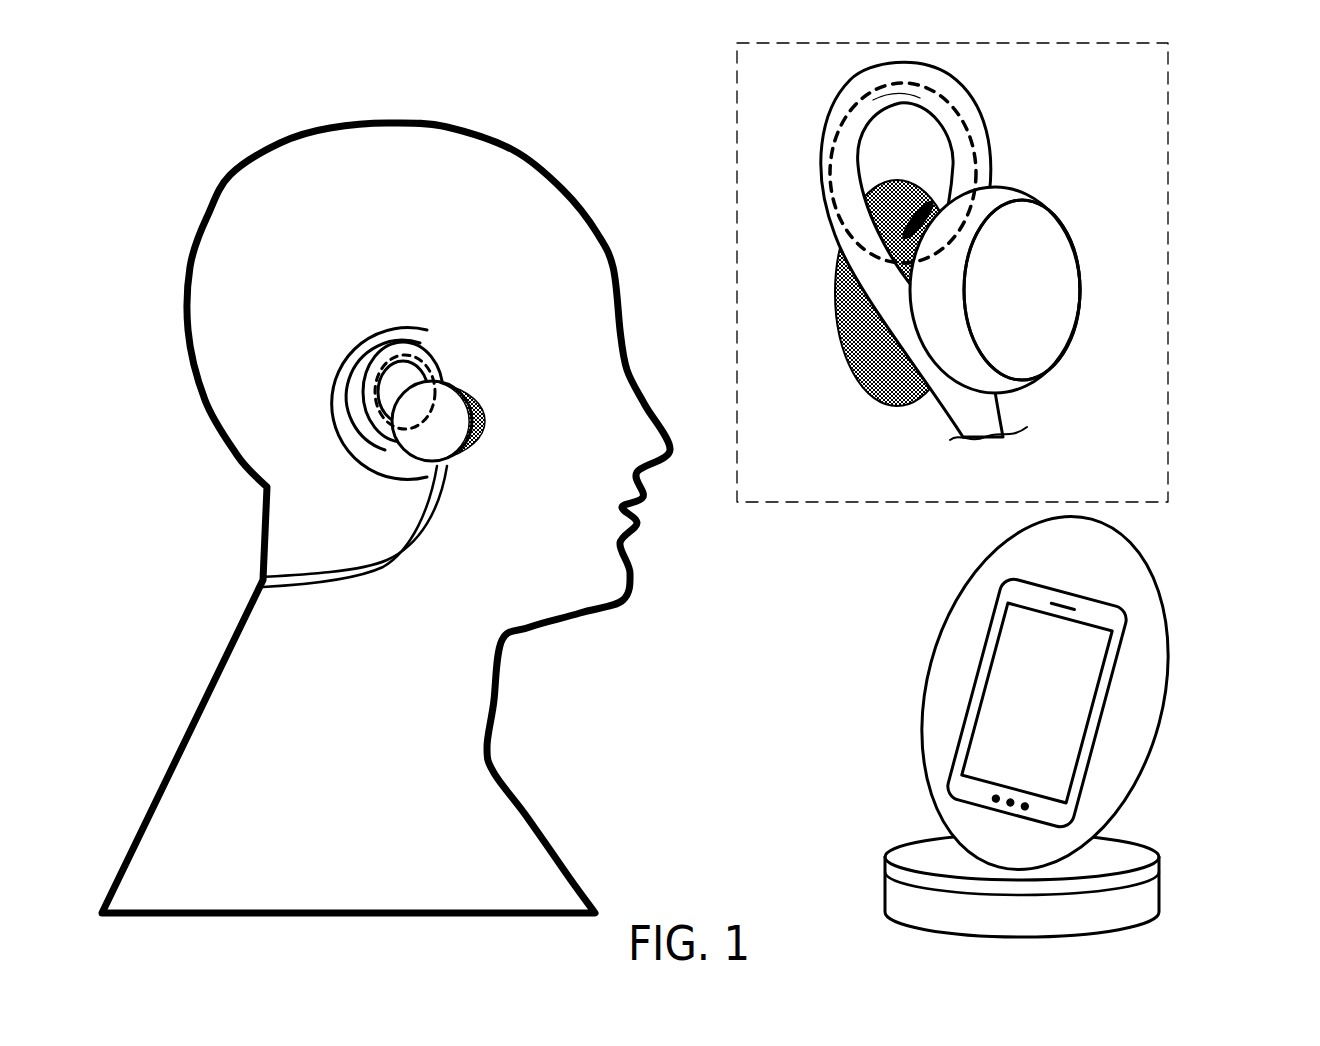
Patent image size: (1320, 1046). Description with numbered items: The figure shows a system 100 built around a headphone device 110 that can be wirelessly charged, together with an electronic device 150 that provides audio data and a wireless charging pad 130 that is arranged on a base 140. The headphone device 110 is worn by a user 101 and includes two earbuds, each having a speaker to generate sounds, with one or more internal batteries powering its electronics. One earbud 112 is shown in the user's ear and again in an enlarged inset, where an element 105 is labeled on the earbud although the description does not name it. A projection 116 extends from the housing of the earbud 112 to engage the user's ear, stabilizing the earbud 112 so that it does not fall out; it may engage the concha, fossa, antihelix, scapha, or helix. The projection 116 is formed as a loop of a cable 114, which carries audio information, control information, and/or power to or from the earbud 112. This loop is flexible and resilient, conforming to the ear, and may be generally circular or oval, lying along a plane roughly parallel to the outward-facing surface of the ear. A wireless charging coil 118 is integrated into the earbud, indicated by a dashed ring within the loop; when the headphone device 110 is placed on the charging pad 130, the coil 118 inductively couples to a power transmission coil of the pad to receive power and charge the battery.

The system 100 is at (1240, 185).
The user 101 is at (233, 177).
The earbud speaker face 105 is at (1030, 363).
The headphone device 110 is at (493, 452).
The earbud 112 is at (448, 403).
The cable 114 is at (387, 567).
The projection 116 is at (433, 373).
The wireless charging coil 118 is at (418, 358).
The wireless charging pad 130 is at (968, 582).
The base 140 is at (1127, 860).
The electronic device 150 is at (962, 740).